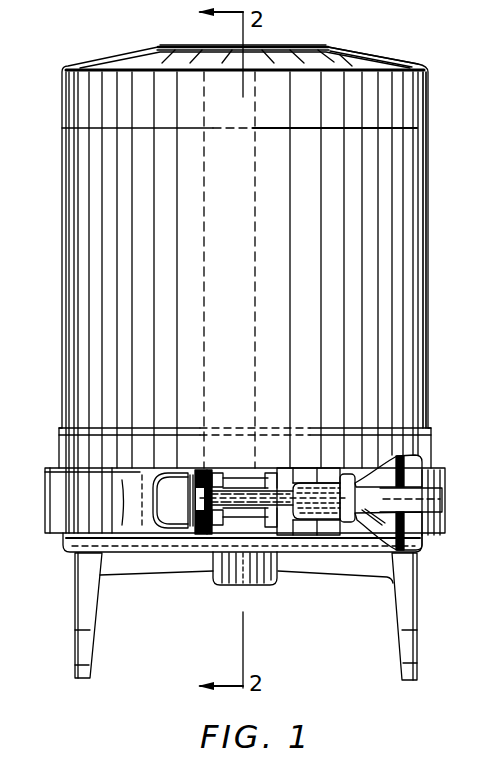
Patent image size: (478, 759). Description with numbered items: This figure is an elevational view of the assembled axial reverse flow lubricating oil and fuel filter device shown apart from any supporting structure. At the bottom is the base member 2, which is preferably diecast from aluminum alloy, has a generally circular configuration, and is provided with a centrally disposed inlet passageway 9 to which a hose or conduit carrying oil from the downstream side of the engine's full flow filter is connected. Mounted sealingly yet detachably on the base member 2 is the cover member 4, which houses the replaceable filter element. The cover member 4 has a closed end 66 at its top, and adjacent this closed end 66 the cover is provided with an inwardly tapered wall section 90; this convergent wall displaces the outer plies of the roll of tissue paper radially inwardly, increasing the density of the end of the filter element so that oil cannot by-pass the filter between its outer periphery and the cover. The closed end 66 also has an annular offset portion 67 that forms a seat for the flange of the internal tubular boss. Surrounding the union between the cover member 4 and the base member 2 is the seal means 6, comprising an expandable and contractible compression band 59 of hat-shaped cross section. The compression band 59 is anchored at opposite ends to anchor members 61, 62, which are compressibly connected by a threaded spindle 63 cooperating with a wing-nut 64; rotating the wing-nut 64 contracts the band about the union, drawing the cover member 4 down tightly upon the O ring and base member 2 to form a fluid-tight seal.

The base member 2 is at (358, 587).
The cover member 4 is at (440, 140).
The seal means 6 is at (436, 446).
The inlet passageway 9 is at (233, 585).
The compression band 59 is at (272, 477).
The anchor member 61 is at (153, 473).
The anchor member 62 is at (306, 477).
The threaded spindle 63 is at (433, 497).
The wing-nut 64 is at (417, 547).
The closed end 66 is at (333, 58).
The annular offset portion 67 is at (277, 47).
The inwardly tapered wall section 90 is at (407, 100).